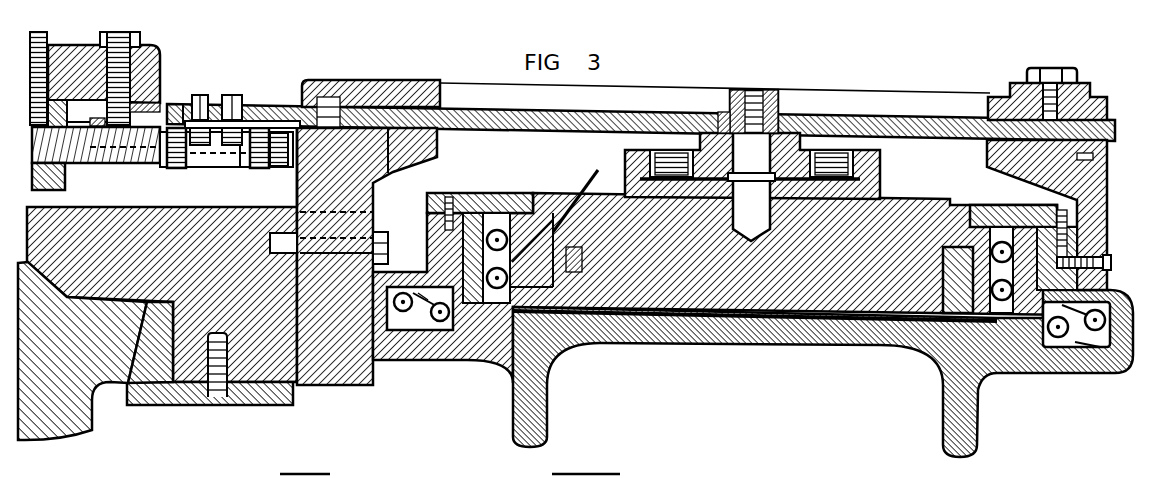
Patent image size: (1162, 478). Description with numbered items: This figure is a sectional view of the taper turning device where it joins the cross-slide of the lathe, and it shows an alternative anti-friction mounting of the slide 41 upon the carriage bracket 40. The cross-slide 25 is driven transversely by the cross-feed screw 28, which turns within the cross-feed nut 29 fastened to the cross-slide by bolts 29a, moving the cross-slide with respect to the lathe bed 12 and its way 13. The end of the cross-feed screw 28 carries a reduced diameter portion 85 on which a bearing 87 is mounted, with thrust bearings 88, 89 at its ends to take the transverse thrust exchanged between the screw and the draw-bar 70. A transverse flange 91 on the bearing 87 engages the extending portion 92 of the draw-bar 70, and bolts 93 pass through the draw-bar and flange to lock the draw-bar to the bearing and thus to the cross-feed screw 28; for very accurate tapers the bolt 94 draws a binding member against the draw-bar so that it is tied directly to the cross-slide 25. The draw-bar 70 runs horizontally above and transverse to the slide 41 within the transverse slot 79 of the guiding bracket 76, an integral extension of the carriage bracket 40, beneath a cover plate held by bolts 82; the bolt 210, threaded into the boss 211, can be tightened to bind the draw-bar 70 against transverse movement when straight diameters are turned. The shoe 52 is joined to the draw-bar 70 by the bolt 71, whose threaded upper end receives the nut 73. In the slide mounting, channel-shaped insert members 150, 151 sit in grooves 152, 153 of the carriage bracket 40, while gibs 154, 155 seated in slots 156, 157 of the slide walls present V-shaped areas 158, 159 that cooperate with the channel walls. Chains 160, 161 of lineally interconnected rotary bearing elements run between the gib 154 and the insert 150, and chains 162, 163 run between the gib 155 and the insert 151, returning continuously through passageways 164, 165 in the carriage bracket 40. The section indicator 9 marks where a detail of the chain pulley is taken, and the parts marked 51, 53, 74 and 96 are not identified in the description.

The section line 9 is at (380, 385).
The lathe bed 12 is at (40, 432).
The way 13 is at (136, 388).
The cross-slide 25 is at (161, 70).
The cross-feed screw 28 is at (142, 166).
The cross-feed nut 29 is at (60, 184).
The bolts 29a is at (47, 34).
The carriage bracket 40 is at (472, 360).
The slide 41 is at (941, 203).
The pivot bolt 51 is at (757, 217).
The shoe 52 is at (805, 155).
The block end 53 is at (882, 162).
The draw-bar 70 is at (455, 112).
The bolt 71 is at (754, 92).
The nut 73 is at (776, 92).
The washer 74 is at (780, 114).
The guiding bracket 76 is at (374, 88).
The transverse slot 79 is at (386, 170).
The bolts 82 is at (334, 84).
The reduced diameter portion 85 is at (285, 166).
The bearing 87 is at (211, 167).
The thrust bearing 88 is at (176, 168).
The thrust bearing 89 is at (262, 168).
The transverse flange 91 is at (242, 124).
The extending portion 92 is at (182, 106).
The bolts 93 is at (224, 95).
The bolt 94 is at (138, 35).
The washer 96 is at (125, 114).
The channel-shaped insert member 150 is at (480, 193).
The channel-shaped insert member 151 is at (1023, 233).
The groove 152 is at (432, 218).
The groove 153 is at (1078, 257).
The gib 154 is at (536, 225).
The gib 155 is at (983, 240).
The slot 156 is at (610, 218).
The slot 157 is at (948, 255).
The V-shaped cross-sectional area 158 is at (505, 286).
The V-shaped cross-sectional area 159 is at (995, 300).
The chain 160 is at (398, 308).
The chain 161 is at (442, 322).
The chain 162 is at (1097, 330).
The chain 163 is at (1060, 336).
The passageway 164 is at (428, 332).
The passageway 165 is at (1083, 346).
The bolt 210 is at (1076, 72).
The boss 211 is at (1092, 93).